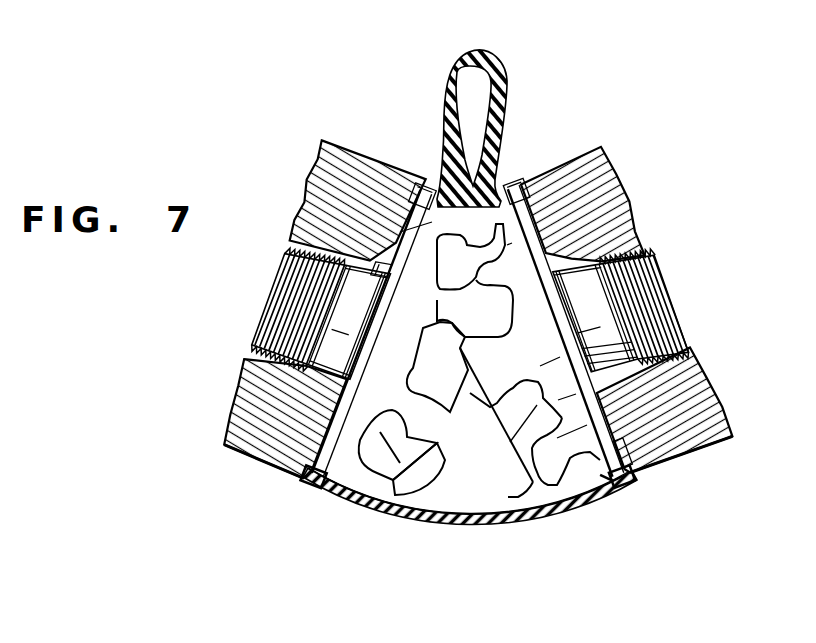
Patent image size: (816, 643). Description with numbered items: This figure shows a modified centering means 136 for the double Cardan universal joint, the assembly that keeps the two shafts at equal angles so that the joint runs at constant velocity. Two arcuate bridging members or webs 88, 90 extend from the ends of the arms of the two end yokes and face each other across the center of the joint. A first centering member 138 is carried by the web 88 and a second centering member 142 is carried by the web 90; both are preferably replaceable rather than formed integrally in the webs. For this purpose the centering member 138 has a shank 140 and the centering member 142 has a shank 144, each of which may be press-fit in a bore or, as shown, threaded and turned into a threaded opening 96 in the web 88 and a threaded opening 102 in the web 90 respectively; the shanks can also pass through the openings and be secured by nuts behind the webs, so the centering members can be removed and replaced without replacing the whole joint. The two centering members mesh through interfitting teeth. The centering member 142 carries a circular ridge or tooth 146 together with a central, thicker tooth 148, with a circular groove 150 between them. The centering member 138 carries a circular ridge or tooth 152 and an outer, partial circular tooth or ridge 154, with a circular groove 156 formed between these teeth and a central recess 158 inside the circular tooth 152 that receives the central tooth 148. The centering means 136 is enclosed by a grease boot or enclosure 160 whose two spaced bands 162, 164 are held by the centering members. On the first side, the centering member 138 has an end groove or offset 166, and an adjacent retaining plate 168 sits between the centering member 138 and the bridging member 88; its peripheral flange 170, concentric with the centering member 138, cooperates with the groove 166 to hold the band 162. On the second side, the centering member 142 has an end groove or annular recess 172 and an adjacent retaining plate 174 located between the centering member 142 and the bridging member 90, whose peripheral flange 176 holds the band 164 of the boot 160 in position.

The bridging member or web 88 is at (340, 137).
The bridging member or web 90 is at (580, 157).
The threaded opening 96 is at (332, 267).
The threaded opening 102 is at (660, 258).
The modified centering means 136 is at (468, 535).
The centering member 138 is at (397, 487).
The shank 140 is at (283, 347).
The centering member 142 is at (547, 496).
The shank 144 is at (690, 345).
The circular ridge or tooth 146 is at (516, 495).
The central tooth 148 is at (490, 408).
The circular groove 150 is at (510, 443).
The circular ridge or tooth 152 is at (428, 447).
The partial circular tooth or ridge 154 is at (385, 500).
The circular groove 156 is at (398, 463).
The central recess 158 is at (467, 365).
The grease boot or enclosure 160 is at (447, 68).
The band 162 is at (337, 494).
The band 164 is at (607, 481).
The end groove or offset 166 is at (432, 182).
The retaining plate 168 is at (394, 274).
The peripheral flange 170 is at (449, 188).
The end groove or annular recess 172 is at (503, 177).
The retaining plate 174 is at (628, 446).
The peripheral flange 176 is at (621, 494).